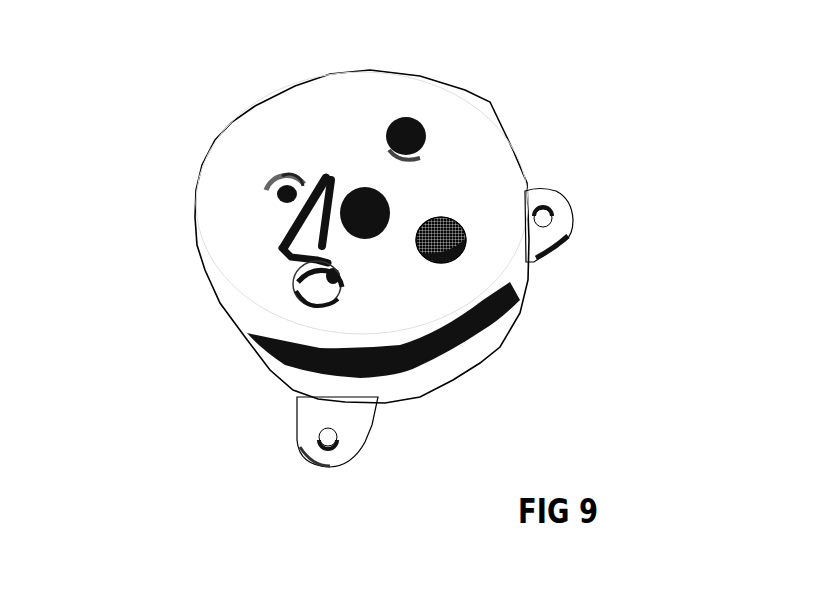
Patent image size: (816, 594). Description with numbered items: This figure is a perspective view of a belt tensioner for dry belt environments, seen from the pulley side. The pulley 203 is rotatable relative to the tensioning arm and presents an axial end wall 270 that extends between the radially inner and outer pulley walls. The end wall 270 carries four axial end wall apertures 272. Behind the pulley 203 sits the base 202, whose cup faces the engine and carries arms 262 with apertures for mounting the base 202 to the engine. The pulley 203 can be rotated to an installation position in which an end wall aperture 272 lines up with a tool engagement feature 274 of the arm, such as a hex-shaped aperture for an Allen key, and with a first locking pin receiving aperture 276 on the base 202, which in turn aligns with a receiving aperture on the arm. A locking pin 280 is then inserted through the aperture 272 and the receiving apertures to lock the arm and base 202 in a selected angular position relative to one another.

The base 202 is at (447, 234).
The pulley 203 is at (295, 98).
The arms 262 is at (553, 240).
The axial end wall 270 is at (275, 128).
The axial end wall apertures 272 is at (420, 133).
The tool engagement feature 274 is at (284, 194).
The first locking pin receiving aperture 276 is at (333, 290).
The locking pin 280 is at (284, 244).